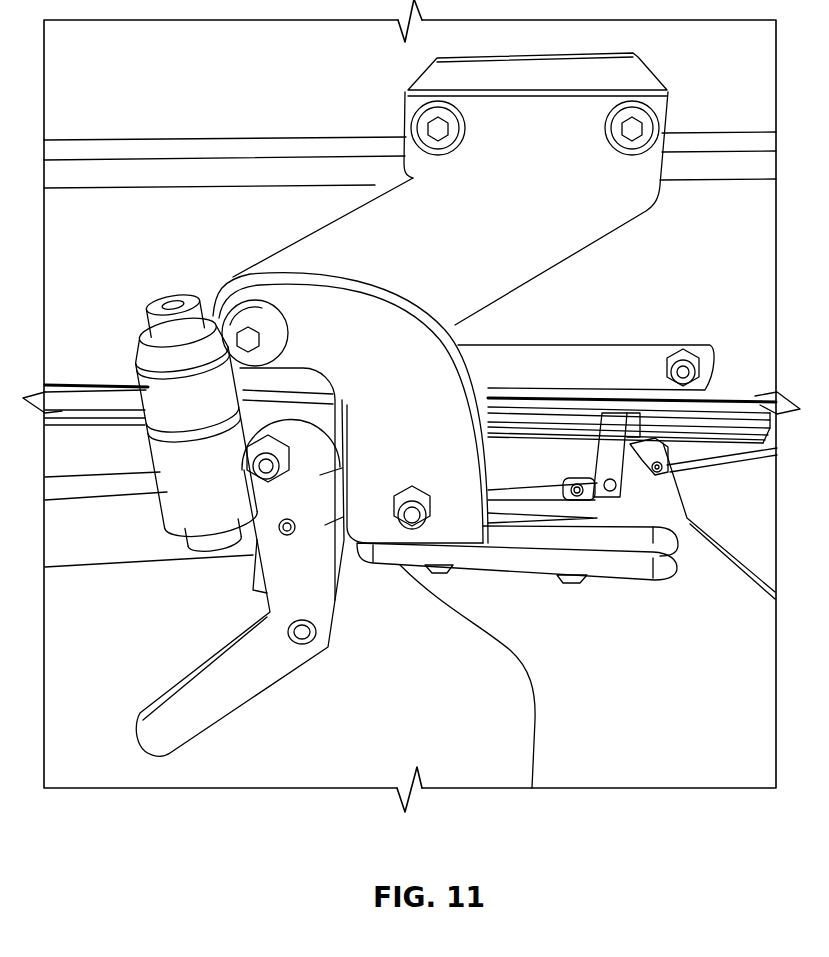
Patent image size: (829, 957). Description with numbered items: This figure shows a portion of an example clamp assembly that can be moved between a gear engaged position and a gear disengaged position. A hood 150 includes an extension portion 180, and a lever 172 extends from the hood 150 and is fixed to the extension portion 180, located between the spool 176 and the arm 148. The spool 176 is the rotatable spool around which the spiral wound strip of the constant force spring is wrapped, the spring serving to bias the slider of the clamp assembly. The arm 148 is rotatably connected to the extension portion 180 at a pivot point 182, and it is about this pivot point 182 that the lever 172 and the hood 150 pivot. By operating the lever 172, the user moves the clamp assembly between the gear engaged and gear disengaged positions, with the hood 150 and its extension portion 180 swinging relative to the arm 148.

The arm 148 is at (407, 435).
The hood 150 is at (568, 128).
The lever 172 is at (195, 692).
The rotatable spool 176 is at (194, 488).
The extension portion 180 is at (395, 234).
The pivot point 182 is at (219, 313).